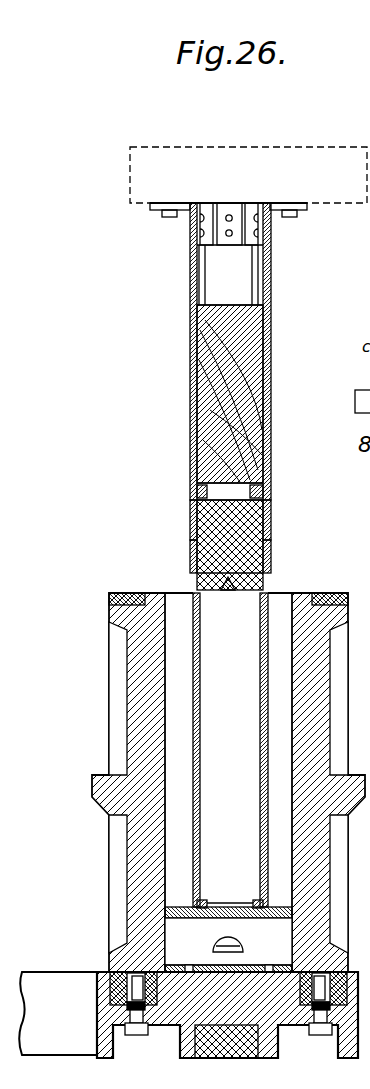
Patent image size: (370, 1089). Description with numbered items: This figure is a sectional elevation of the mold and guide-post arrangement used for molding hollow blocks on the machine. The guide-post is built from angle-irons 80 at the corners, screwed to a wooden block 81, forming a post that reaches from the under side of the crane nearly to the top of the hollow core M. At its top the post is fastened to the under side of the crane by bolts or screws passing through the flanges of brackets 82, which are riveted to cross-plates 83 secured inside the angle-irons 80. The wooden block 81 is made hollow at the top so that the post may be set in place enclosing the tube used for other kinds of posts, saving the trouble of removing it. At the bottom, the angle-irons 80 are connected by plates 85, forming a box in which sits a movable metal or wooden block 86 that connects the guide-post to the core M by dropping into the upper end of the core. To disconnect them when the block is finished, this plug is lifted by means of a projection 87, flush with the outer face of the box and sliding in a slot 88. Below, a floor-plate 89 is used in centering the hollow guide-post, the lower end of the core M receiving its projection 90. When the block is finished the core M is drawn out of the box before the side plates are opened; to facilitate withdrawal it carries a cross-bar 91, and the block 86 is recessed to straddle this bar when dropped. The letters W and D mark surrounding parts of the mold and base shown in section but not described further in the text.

The angle-irons 80 is at (192, 287).
The wooden block 81 is at (243, 352).
The brackets 82 is at (153, 207).
The cross-plates 83 is at (192, 229).
The plates 85 is at (268, 492).
The movable block 86 is at (218, 538).
The projection 87 is at (269, 552).
The slot 88 is at (267, 528).
The floor-plate 89 is at (175, 906).
The projection 90 is at (207, 901).
The cross-bar 91 is at (229, 594).
The housing W is at (108, 786).
The hollow core M is at (230, 750).
The lower chamber D is at (228, 945).